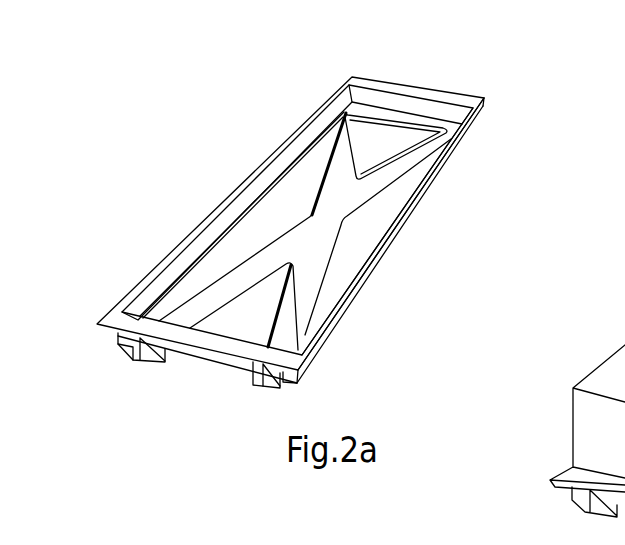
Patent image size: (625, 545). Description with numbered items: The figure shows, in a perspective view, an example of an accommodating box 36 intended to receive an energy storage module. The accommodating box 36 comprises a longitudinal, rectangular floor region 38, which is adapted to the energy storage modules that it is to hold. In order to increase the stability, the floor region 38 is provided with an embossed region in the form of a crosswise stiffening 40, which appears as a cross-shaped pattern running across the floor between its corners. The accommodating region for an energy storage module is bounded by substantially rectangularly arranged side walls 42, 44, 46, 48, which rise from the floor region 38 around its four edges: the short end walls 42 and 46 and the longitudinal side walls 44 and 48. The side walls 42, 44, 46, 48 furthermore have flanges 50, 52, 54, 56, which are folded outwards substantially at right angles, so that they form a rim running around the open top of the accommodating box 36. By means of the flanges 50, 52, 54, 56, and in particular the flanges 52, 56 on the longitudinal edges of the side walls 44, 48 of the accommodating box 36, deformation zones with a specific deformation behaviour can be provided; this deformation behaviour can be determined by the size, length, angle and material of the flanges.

The accommodating box 36 is at (329, 226).
The floor region 38 is at (278, 212).
The crosswise stiffening 40 is at (343, 192).
The side wall 42 is at (223, 362).
The side wall 44 is at (407, 212).
The side wall 46 is at (398, 100).
The side wall 48 is at (155, 292).
The flange 50 is at (198, 338).
The flange 52 is at (340, 303).
The flange 54 is at (443, 97).
The flange 56 is at (188, 238).